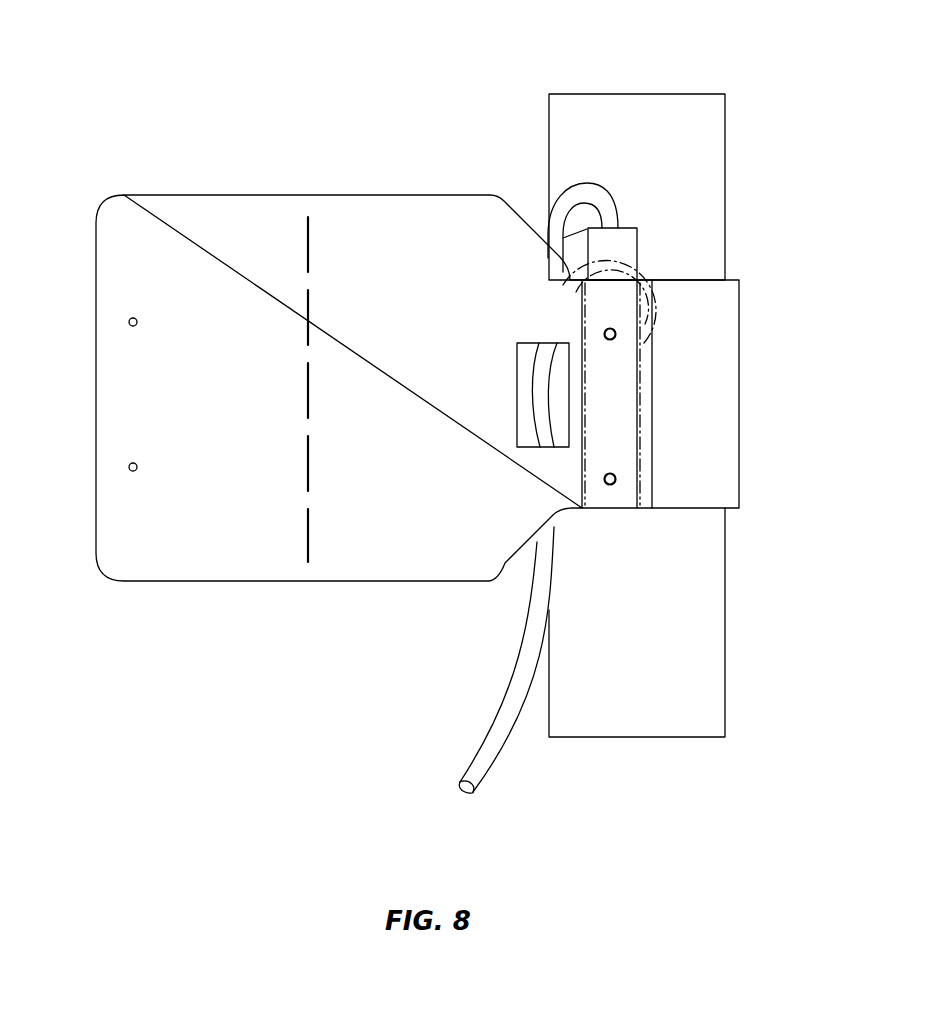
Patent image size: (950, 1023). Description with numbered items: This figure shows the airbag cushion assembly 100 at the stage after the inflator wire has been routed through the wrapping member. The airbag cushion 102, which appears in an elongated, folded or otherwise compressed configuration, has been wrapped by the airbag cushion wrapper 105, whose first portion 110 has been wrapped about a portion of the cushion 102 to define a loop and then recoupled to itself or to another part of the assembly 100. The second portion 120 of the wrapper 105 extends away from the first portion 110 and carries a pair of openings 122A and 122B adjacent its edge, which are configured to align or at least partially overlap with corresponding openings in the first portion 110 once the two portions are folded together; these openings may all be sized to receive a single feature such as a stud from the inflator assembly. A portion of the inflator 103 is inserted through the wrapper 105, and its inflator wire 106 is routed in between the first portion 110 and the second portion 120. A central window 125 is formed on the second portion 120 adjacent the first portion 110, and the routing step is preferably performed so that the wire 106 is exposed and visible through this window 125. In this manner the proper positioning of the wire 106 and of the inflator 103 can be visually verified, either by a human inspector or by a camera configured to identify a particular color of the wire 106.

The airbag cushion assembly 100 is at (685, 78).
The airbag cushion 102 is at (707, 125).
The inflator 103 is at (623, 245).
The airbag cushion wrapper 105 is at (233, 590).
The inflator wire 106 is at (562, 203).
The first portion 110 is at (723, 395).
The second portion 120 is at (390, 583).
The opening 122A is at (128, 327).
The opening 122B is at (129, 471).
The window 125 is at (517, 430).